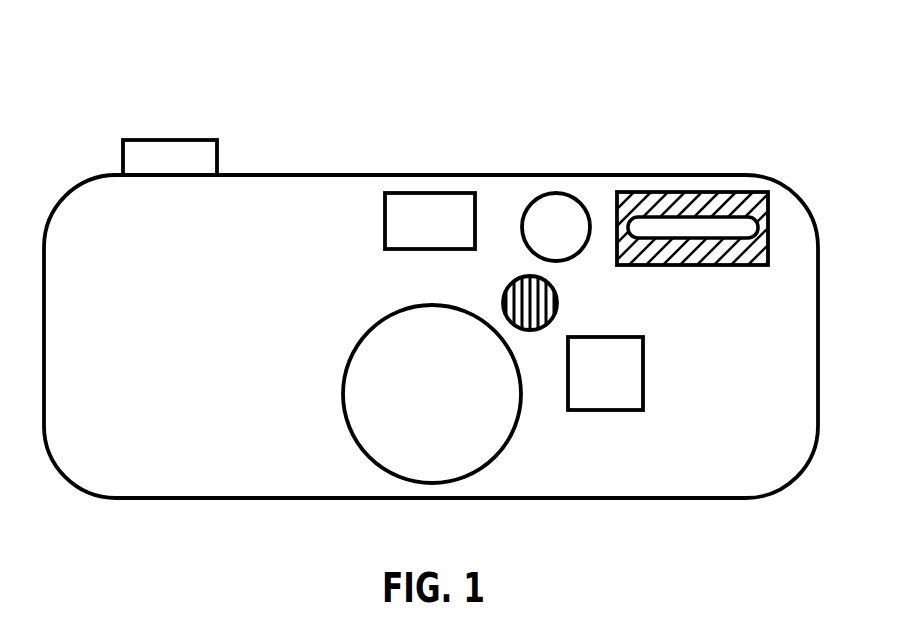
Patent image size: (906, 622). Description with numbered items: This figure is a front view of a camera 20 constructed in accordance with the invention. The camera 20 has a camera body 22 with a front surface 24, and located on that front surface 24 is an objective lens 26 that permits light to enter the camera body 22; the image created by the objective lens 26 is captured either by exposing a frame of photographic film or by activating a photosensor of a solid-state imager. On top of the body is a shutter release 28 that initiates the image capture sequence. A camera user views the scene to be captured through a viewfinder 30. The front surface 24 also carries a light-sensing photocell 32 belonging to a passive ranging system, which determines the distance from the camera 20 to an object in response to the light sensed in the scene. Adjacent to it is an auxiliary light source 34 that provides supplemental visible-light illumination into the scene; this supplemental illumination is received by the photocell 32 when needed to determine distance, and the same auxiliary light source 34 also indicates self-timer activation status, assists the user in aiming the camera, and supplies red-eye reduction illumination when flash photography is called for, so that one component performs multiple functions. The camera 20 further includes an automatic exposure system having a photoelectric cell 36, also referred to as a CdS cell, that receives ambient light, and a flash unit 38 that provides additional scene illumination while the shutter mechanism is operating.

The camera 20 is at (451, 76).
The camera body 22 is at (78, 483).
The front surface 24 is at (204, 365).
The objective lens 26 is at (512, 440).
The shutter release 28 is at (153, 140).
The viewfinder 30 is at (643, 363).
The light-sensing photocell 32 is at (416, 193).
The auxiliary light source 34 is at (531, 201).
The photoelectric cell 36 is at (553, 288).
The flash unit 38 is at (730, 192).